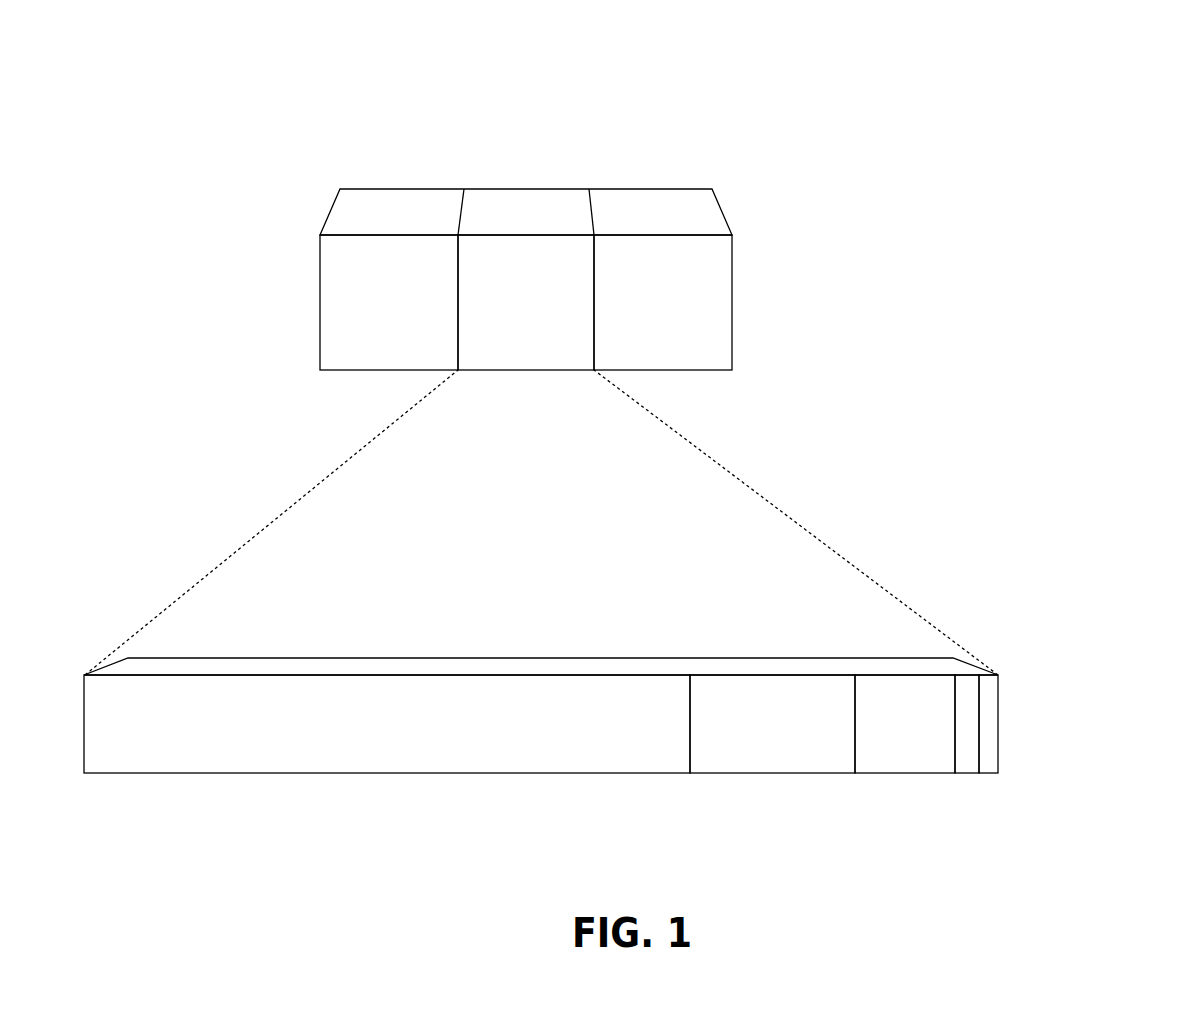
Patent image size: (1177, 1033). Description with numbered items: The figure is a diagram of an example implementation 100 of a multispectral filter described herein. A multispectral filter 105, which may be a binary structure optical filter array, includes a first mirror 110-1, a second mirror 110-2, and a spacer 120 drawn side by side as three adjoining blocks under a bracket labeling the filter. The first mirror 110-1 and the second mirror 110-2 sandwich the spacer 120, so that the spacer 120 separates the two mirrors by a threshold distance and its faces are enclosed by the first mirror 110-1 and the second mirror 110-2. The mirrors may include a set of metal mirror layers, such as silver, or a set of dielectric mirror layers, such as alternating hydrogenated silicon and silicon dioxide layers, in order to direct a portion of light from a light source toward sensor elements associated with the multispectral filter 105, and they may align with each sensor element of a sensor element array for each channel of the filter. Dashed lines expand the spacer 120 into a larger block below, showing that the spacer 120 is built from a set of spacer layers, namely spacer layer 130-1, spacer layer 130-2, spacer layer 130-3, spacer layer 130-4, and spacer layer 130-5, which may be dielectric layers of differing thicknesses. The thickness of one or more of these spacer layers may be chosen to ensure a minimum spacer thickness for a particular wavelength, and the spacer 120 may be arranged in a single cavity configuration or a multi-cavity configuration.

The example implementation 100 is at (121, 49).
The multispectral filter 105 is at (319, 197).
The first mirror 110-1 is at (360, 327).
The second mirror 110-2 is at (634, 327).
The spacer 120 is at (508, 327).
The spacer layer 130-1 is at (390, 764).
The spacer layer 130-2 is at (777, 764).
The spacer layer 130-3 is at (906, 762).
The spacer layer 130-4 is at (974, 761).
The spacer layer 130-5 is at (999, 719).